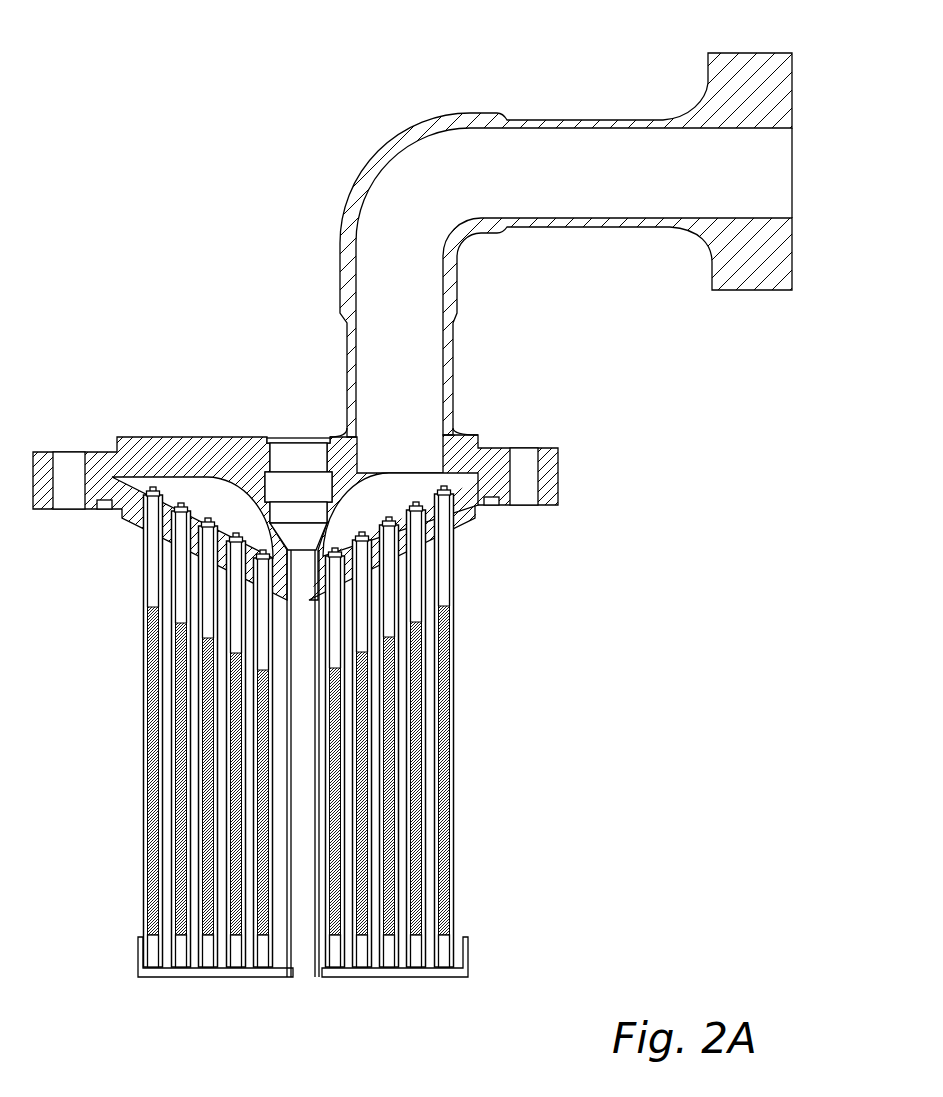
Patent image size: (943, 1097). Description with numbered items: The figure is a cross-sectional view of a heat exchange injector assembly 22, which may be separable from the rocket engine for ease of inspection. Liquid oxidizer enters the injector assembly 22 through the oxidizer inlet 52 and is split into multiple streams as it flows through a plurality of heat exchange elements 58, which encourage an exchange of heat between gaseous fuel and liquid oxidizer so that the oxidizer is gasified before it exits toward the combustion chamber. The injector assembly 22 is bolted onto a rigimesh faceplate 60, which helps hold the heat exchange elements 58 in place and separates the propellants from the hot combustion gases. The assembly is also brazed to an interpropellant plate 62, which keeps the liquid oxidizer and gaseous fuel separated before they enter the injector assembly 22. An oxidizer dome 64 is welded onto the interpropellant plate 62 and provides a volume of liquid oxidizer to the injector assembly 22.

The heat exchange injector assembly 22 is at (652, 505).
The oxidizer inlet 52 is at (792, 268).
The heat exchange elements 58 is at (130, 782).
The rigimesh faceplate 60 is at (420, 974).
The interpropellant plate 62 is at (403, 548).
The oxidizer dome 64 is at (207, 500).